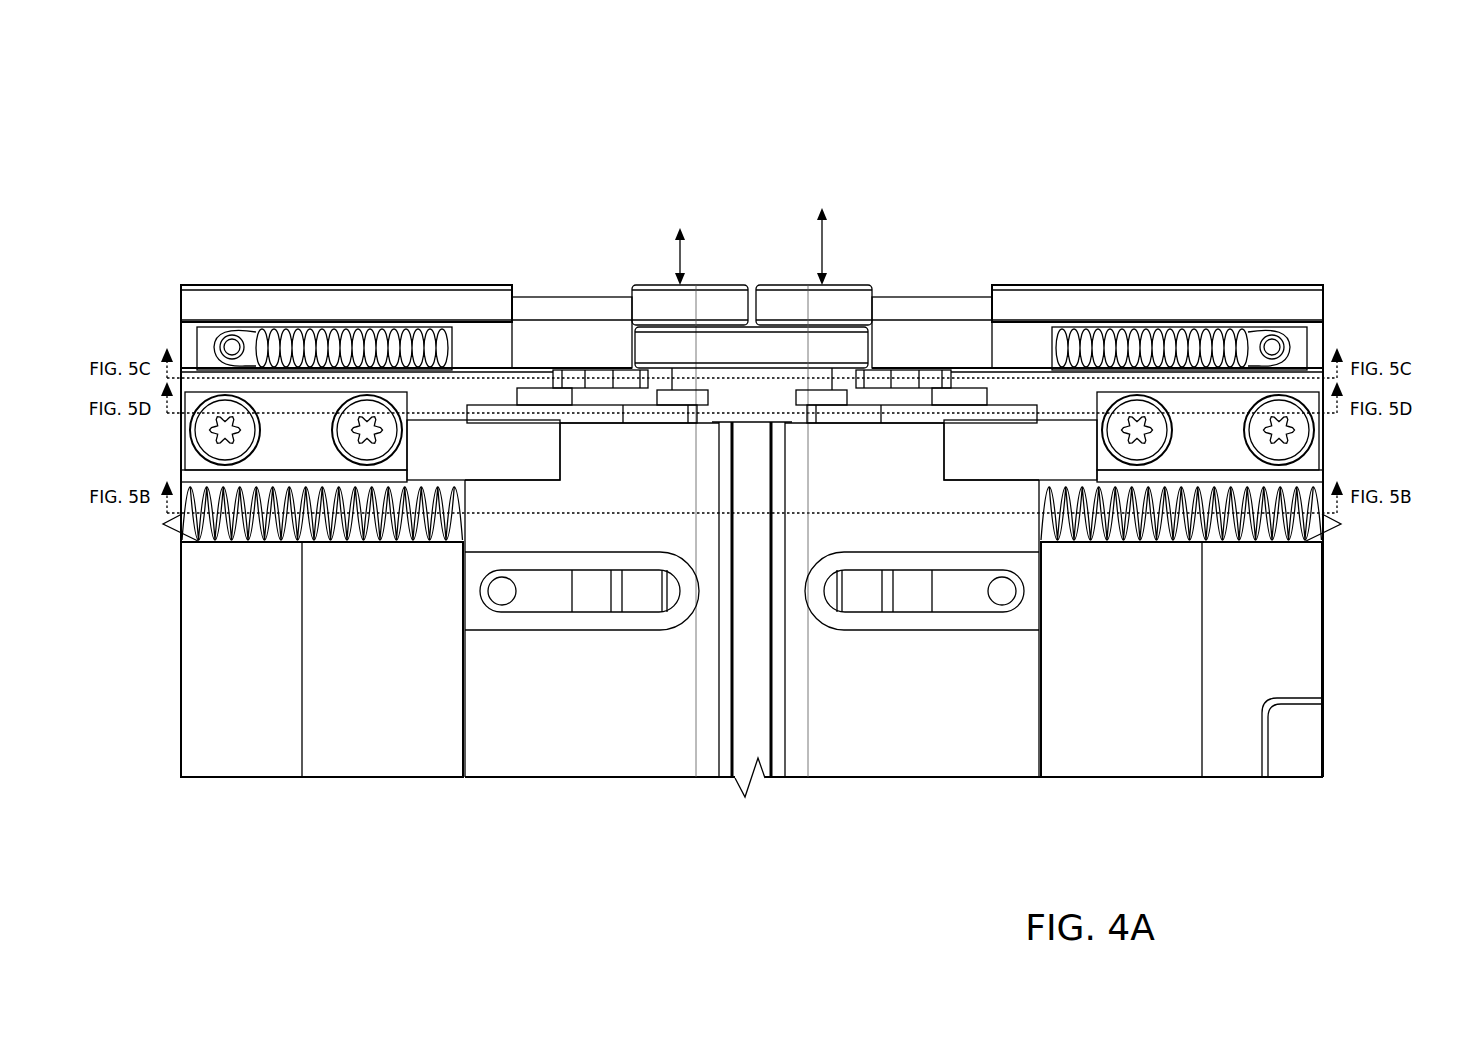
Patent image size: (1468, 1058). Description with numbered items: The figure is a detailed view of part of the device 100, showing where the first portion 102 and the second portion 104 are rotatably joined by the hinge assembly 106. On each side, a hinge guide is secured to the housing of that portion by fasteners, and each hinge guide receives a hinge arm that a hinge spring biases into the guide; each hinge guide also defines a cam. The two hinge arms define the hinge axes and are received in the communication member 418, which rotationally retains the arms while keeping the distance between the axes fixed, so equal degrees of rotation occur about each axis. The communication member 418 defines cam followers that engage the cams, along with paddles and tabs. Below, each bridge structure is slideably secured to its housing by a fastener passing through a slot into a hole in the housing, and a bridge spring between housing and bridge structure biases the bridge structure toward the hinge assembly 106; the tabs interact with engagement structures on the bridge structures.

The device 100 is at (1280, 87).
The hinge assembly 106 is at (741, 158).
The communication member 418 is at (833, 360).
The first portion 102 is at (218, 786).
The second portion 104 is at (1333, 605).